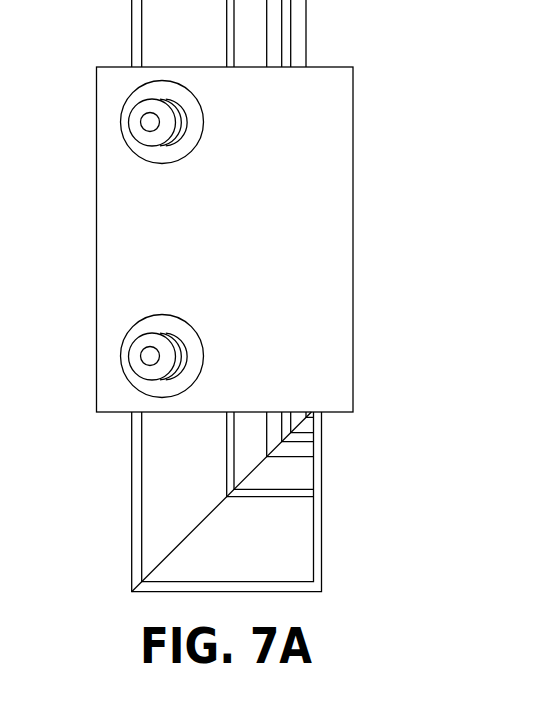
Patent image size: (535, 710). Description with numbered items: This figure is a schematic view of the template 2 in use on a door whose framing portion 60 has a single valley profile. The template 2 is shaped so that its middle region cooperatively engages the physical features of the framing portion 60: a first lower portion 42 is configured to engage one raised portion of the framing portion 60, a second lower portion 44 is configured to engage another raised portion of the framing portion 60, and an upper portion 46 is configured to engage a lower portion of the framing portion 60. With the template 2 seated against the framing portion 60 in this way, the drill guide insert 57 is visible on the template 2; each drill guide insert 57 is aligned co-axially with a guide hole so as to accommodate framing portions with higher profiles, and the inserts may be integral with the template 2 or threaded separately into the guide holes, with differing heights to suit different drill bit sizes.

The template 2 is at (379, 168).
The first lower portion 42 is at (157, 494).
The second lower portion 44 is at (295, 448).
The upper portion 46 is at (295, 494).
The drill guide insert 57 is at (131, 126).
The framing portion 60 is at (140, 38).